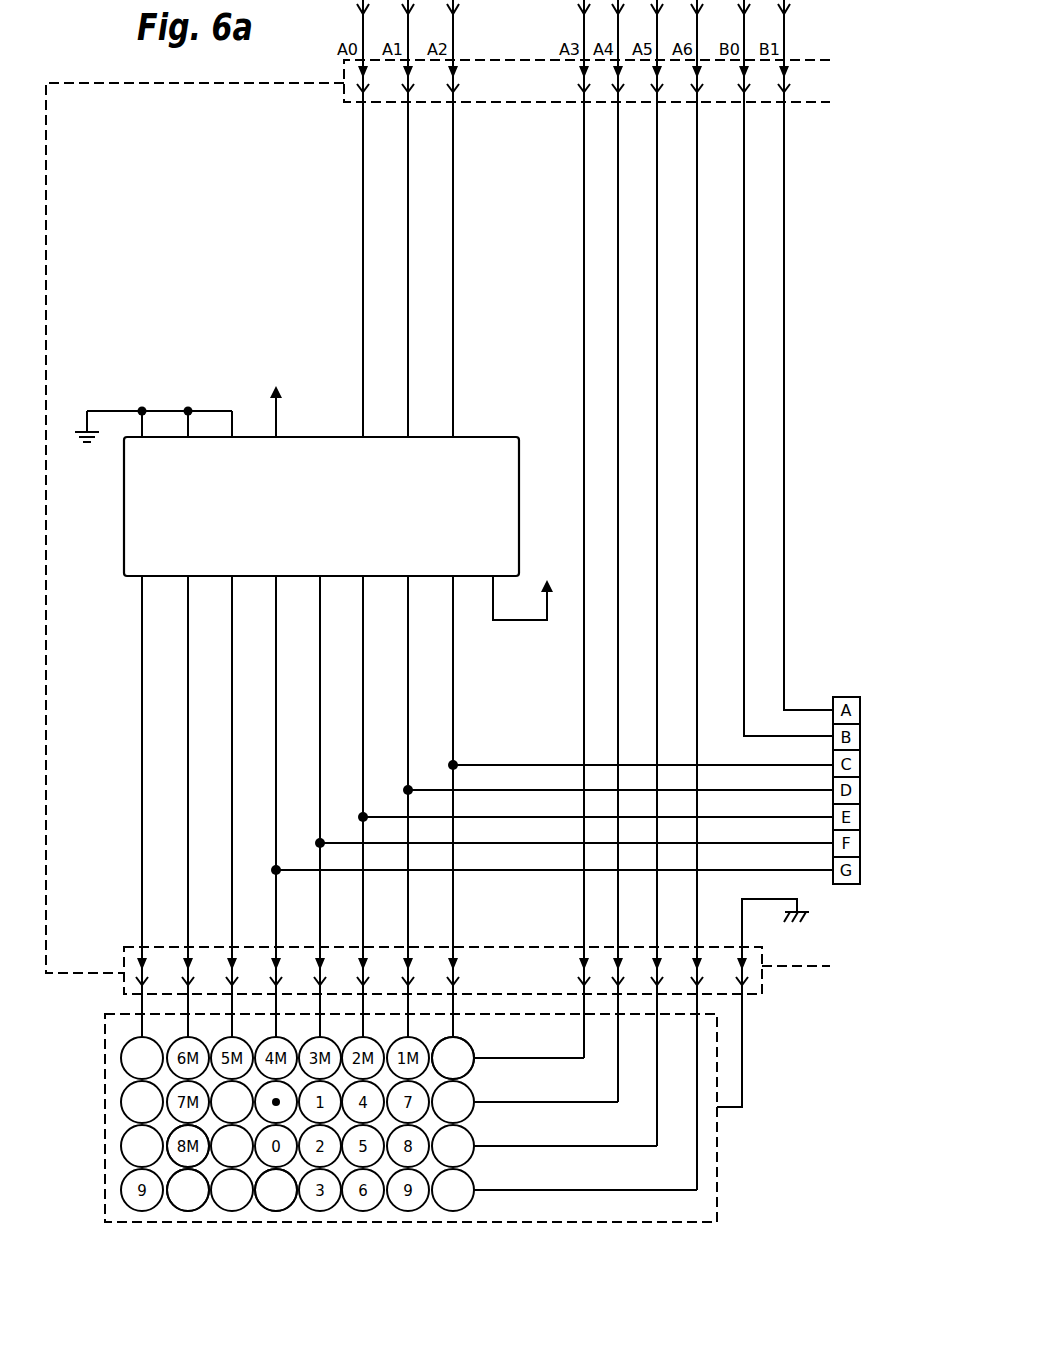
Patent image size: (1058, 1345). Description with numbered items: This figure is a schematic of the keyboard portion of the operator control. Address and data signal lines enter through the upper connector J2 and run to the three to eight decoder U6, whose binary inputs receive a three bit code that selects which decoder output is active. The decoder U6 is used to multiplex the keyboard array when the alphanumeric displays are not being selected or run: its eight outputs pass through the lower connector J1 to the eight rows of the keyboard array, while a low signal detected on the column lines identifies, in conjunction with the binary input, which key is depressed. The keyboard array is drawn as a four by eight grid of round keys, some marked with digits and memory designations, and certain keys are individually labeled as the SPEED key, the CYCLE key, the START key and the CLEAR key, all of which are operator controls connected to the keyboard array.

The connector J1 is at (462, 1044).
The connector J2 is at (438, 516).
The three to eight decoder U6 is at (454, 701).
The speed key SPEED is at (456, 1049).
The cycle key CYCLE is at (216, 1139).
The start key START is at (193, 1208).
The clear key CLEAR is at (278, 1208).